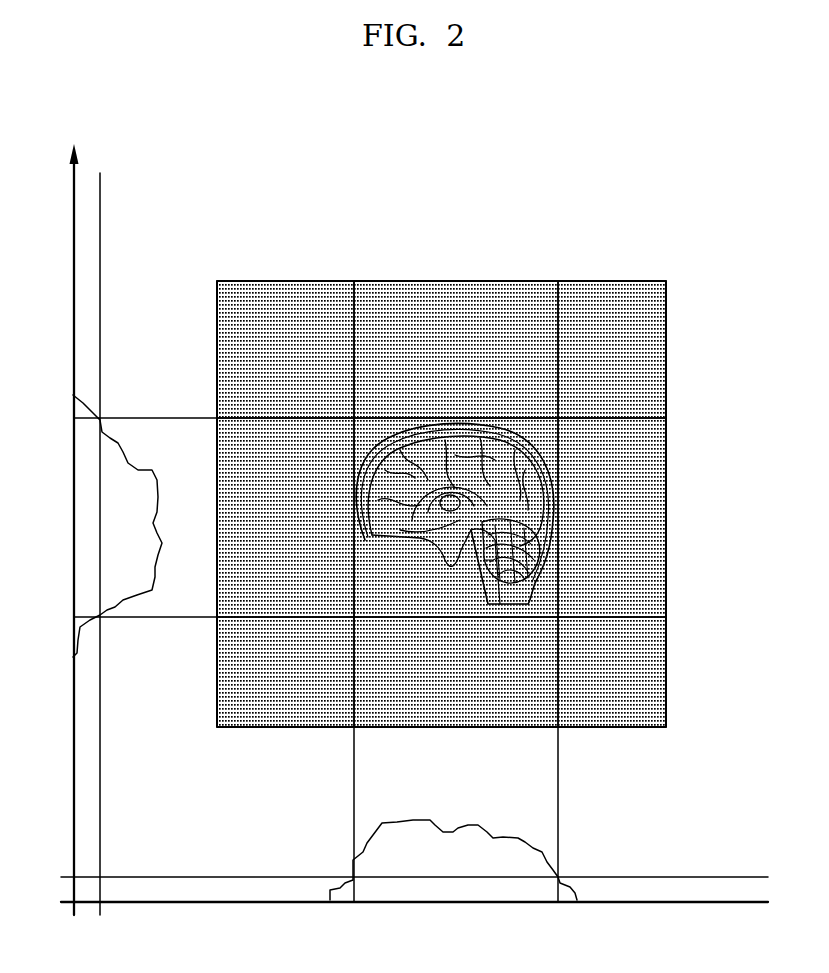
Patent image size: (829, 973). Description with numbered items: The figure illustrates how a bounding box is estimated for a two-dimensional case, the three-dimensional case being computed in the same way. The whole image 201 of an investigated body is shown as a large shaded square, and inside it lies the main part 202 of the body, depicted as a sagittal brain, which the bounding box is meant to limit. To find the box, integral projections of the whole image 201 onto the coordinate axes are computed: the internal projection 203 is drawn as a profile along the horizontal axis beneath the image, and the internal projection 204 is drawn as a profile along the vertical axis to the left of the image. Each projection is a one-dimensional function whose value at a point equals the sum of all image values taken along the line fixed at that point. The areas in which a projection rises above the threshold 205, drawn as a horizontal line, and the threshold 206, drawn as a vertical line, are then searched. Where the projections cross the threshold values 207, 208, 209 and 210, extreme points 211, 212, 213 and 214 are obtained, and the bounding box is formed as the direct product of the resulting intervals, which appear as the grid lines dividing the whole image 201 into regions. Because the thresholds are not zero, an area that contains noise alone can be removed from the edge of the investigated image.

The whole image 201 is at (441, 486).
The main part 202 is at (547, 472).
The internal projection 203 is at (460, 827).
The internal projection 204 is at (137, 467).
The threshold 205 is at (662, 875).
The threshold 206 is at (100, 228).
The threshold value 207 is at (559, 680).
The threshold value 208 is at (355, 680).
The threshold value 209 is at (255, 615).
The threshold value 210 is at (255, 417).
The extreme point 211 is at (355, 417).
The extreme point 212 is at (558, 417).
The extreme point 213 is at (355, 615).
The extreme point 214 is at (559, 615).